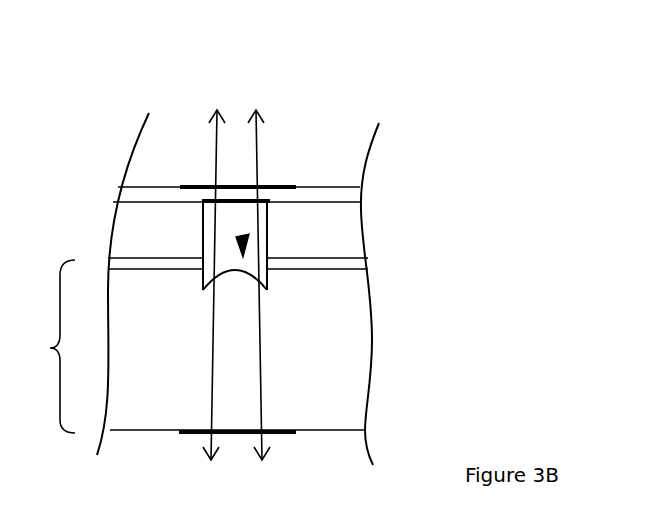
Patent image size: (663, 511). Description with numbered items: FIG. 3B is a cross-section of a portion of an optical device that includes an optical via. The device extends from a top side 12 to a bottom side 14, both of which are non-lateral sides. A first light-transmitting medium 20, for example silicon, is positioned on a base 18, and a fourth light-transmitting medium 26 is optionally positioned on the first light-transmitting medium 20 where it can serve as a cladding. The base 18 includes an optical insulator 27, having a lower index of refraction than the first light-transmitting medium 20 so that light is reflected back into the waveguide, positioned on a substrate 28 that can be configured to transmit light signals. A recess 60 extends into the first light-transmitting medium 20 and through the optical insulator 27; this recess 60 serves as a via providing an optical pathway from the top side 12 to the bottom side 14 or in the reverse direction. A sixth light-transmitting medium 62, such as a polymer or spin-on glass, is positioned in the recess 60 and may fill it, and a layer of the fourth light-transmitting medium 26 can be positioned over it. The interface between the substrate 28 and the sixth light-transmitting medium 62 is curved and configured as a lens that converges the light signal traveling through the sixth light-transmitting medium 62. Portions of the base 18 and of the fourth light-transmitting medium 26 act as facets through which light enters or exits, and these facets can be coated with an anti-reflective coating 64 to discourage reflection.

The top side 12 is at (133, 187).
The bottom side 14 is at (132, 433).
The base 18 is at (50, 348).
The first light-transmitting medium 20 is at (118, 218).
The fourth light-transmitting medium 26 is at (350, 195).
The optical insulator 27 is at (362, 265).
The substrate 28 is at (363, 333).
The recess 60 is at (246, 236).
The sixth light-transmitting medium 62 is at (232, 232).
The anti-reflective coating 64 is at (213, 285).